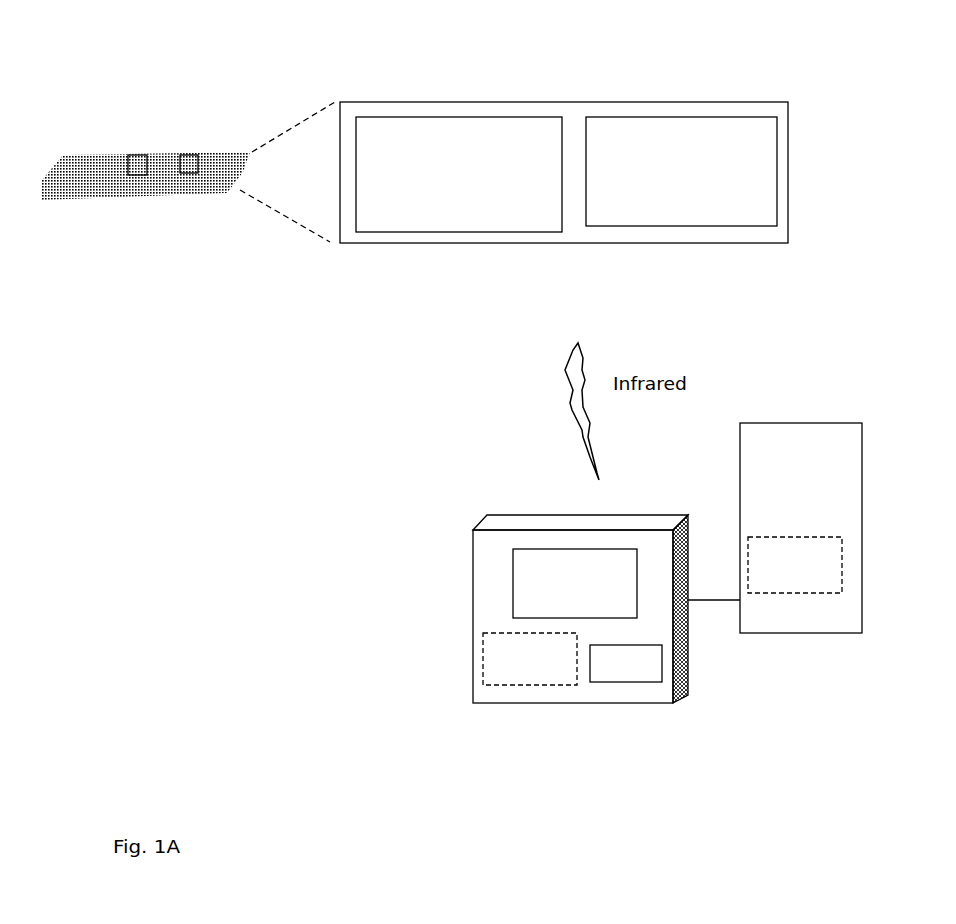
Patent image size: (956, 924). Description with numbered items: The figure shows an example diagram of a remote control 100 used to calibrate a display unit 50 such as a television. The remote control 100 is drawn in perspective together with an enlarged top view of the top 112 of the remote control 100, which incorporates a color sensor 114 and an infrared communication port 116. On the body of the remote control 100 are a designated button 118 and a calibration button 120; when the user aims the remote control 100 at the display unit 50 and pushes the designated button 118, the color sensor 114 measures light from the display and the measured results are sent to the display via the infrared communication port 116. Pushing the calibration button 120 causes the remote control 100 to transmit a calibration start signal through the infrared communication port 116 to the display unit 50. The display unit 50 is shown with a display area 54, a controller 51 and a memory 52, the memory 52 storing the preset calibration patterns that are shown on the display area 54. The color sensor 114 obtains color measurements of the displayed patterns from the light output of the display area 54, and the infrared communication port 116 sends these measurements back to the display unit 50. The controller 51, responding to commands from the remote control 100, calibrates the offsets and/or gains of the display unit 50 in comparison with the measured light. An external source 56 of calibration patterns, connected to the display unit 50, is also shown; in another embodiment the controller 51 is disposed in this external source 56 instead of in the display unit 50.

The remote control 100 is at (88, 136).
The top of the remote control 112 is at (237, 177).
The color sensor 114 is at (390, 115).
The infrared communication port 116 is at (648, 115).
The designated button 118 is at (136, 160).
The calibration button 120 is at (187, 155).
The display unit 50 is at (493, 725).
The controller 51 is at (493, 668).
The memory 52 is at (618, 687).
The display area 54 is at (515, 583).
The external source 56 is at (798, 637).